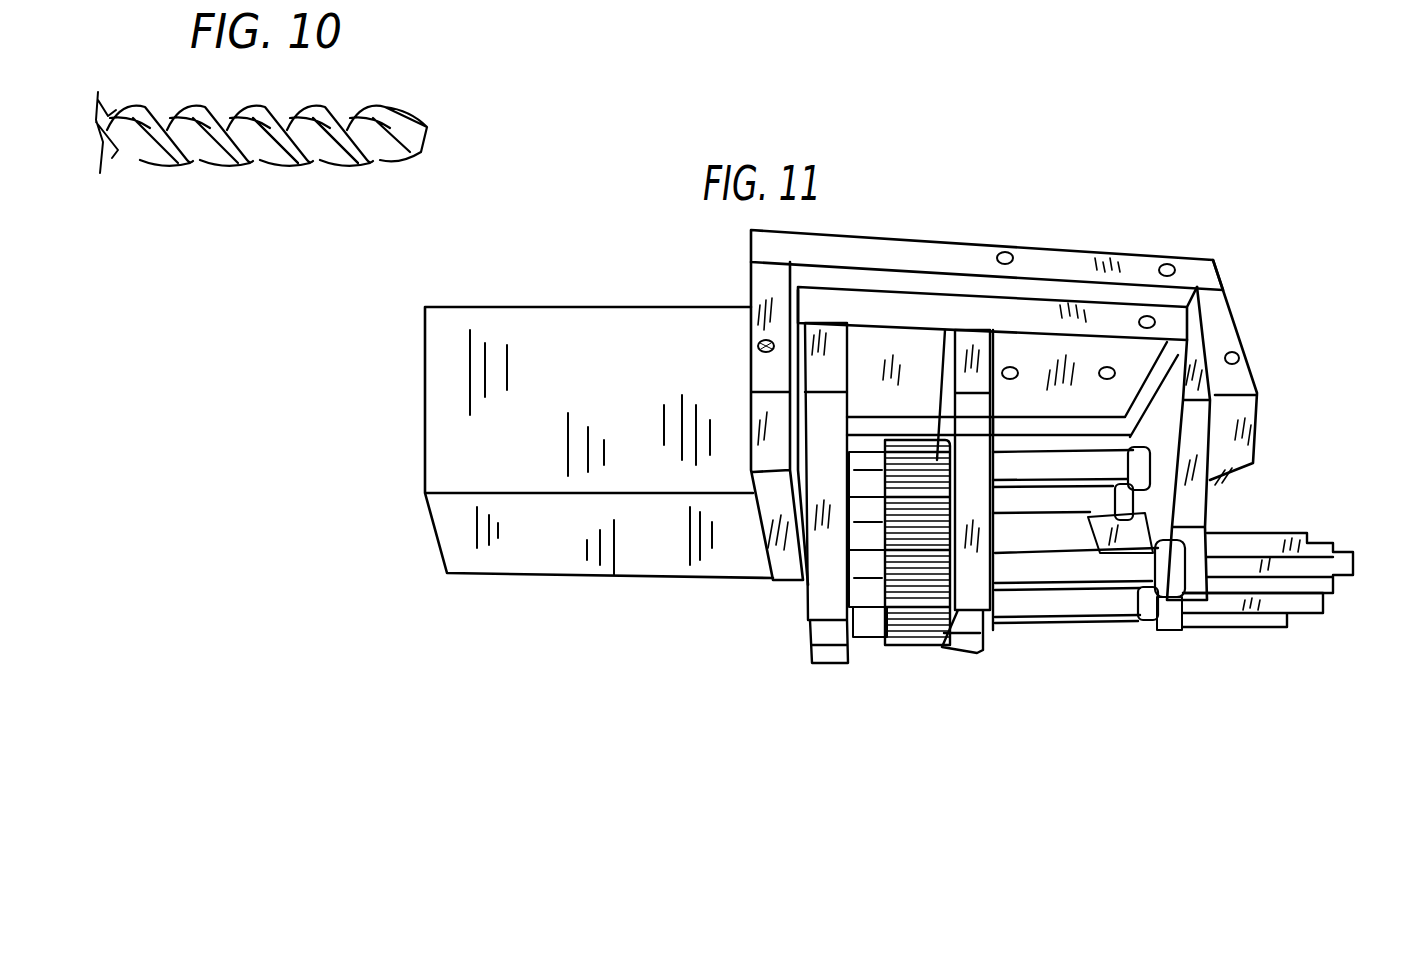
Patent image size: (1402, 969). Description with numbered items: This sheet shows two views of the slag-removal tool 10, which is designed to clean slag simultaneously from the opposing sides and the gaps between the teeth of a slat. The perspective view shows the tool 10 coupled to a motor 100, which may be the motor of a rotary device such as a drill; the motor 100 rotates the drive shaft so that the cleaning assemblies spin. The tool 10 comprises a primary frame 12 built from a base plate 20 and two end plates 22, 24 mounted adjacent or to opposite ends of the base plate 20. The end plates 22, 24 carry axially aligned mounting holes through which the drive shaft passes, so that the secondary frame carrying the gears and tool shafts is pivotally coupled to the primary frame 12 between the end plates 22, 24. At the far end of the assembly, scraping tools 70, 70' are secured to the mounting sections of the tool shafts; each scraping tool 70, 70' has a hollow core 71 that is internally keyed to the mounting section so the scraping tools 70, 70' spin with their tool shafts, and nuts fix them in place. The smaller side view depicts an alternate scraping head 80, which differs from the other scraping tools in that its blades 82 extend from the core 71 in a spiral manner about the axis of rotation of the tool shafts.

In FIG. 10, the alternate scraping head 80 is at (432, 94).
In FIG. 10, the blades 82 is at (263, 160).
In FIG. 10, the hollow core 71 is at (335, 123).
In FIG. 11, the motor 100 is at (539, 296).
In FIG. 11, the primary frame 12 is at (709, 286).
In FIG. 11, the end plate 22 is at (760, 378).
In FIG. 11, the base plate 20 is at (1033, 252).
In FIG. 11, the end plate 24 is at (1228, 302).
In FIG. 11, the tool 10 is at (1071, 654).
In FIG. 11, the scraping tool 70 is at (1268, 512).
In FIG. 11, the scraping tool 70' is at (1253, 660).